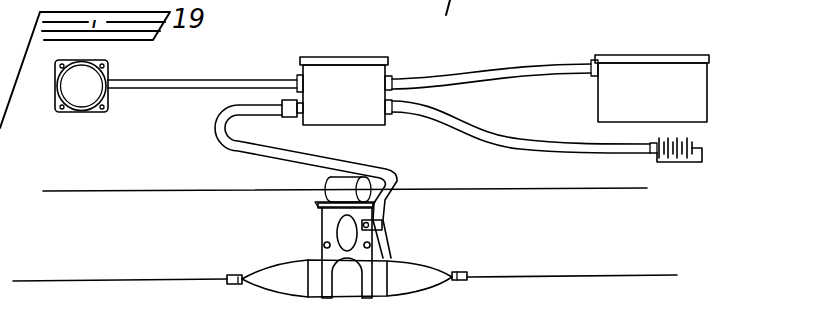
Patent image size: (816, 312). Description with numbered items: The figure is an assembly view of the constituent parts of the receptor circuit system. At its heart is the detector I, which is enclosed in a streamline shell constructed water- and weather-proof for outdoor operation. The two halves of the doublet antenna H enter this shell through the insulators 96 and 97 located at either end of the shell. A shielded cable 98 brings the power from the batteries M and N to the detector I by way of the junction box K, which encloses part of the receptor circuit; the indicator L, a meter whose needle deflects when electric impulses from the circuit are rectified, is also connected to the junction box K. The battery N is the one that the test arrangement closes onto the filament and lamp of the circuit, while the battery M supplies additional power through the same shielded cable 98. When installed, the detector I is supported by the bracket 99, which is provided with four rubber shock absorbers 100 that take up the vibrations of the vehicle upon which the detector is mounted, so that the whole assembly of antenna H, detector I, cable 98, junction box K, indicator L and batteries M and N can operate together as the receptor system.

The insulator 96 is at (253, 251).
The insulator 97 is at (465, 271).
The shielded cable 98 is at (375, 170).
The bracket 99 is at (362, 238).
The rubber shock absorbers 100 is at (330, 178).
The junction box K is at (372, 78).
The indicator L is at (96, 59).
The battery M is at (650, 88).
The battery N is at (676, 159).
The doublet antenna H is at (629, 256).
The detector I is at (347, 250).